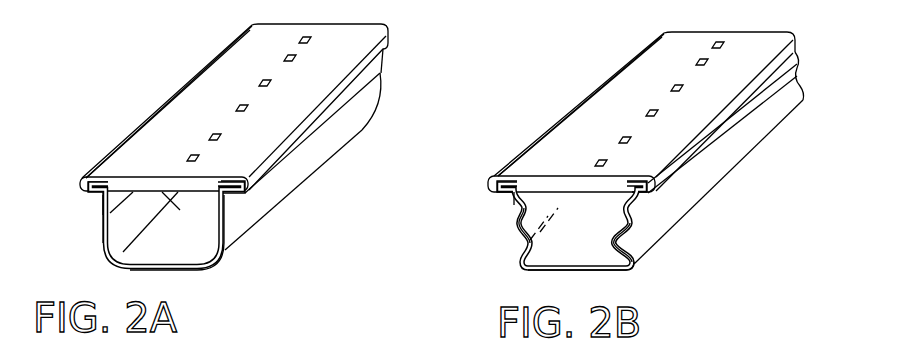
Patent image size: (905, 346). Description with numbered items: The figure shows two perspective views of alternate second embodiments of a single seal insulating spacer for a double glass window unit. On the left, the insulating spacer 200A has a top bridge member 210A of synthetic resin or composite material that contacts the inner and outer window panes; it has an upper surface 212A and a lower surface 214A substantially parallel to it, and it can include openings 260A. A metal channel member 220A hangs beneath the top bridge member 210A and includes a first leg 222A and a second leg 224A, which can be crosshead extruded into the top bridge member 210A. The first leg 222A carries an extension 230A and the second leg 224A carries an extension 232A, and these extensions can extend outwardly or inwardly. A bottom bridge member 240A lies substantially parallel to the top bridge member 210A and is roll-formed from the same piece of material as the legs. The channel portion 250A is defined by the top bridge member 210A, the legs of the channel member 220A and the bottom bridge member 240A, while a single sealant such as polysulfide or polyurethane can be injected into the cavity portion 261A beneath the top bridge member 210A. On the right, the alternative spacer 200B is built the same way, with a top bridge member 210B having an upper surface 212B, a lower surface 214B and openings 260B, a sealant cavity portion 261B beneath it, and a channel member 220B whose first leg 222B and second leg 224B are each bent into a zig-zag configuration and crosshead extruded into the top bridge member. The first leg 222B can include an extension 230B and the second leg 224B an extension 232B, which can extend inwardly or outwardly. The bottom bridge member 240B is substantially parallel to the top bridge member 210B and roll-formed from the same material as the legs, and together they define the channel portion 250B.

In FIG. 2A, the insulating spacer 200A is at (118, 128).
In FIG. 2A, the top bridge member 210A is at (182, 103).
In FIG. 2A, the upper surface 212A is at (147, 177).
In FIG. 2A, the lower surface 214A is at (161, 192).
In FIG. 2A, the channel member 220A is at (100, 249).
In FIG. 2A, the first leg 222A is at (103, 222).
In FIG. 2A, the second leg 224A is at (240, 216).
In FIG. 2A, the extension 230A is at (87, 196).
In FIG. 2A, the extension 232A is at (230, 177).
In FIG. 2A, the bottom bridge member 240A is at (172, 271).
In FIG. 2A, the channel portion 250A is at (193, 252).
In FIG. 2A, the openings 260A is at (273, 84).
In FIG. 2A, the cavity portion 261A is at (100, 203).
In FIG. 2B, the insulating spacer 200B is at (470, 185).
In FIG. 2B, the top bridge member 210B is at (608, 100).
In FIG. 2B, the upper surface 212B is at (543, 173).
In FIG. 2B, the lower surface 214B is at (543, 193).
In FIG. 2B, the channel member 220B is at (515, 248).
In FIG. 2B, the first leg 222B is at (523, 240).
In FIG. 2B, the second leg 224B is at (640, 230).
In FIG. 2B, the extension 230B is at (505, 178).
In FIG. 2B, the extension 232B is at (650, 175).
In FIG. 2B, the bottom bridge member 240B is at (573, 268).
In FIG. 2B, the channel portion 250B is at (597, 245).
In FIG. 2B, the openings 260B is at (606, 161).
In FIG. 2B, the cavity portion 261B is at (507, 200).